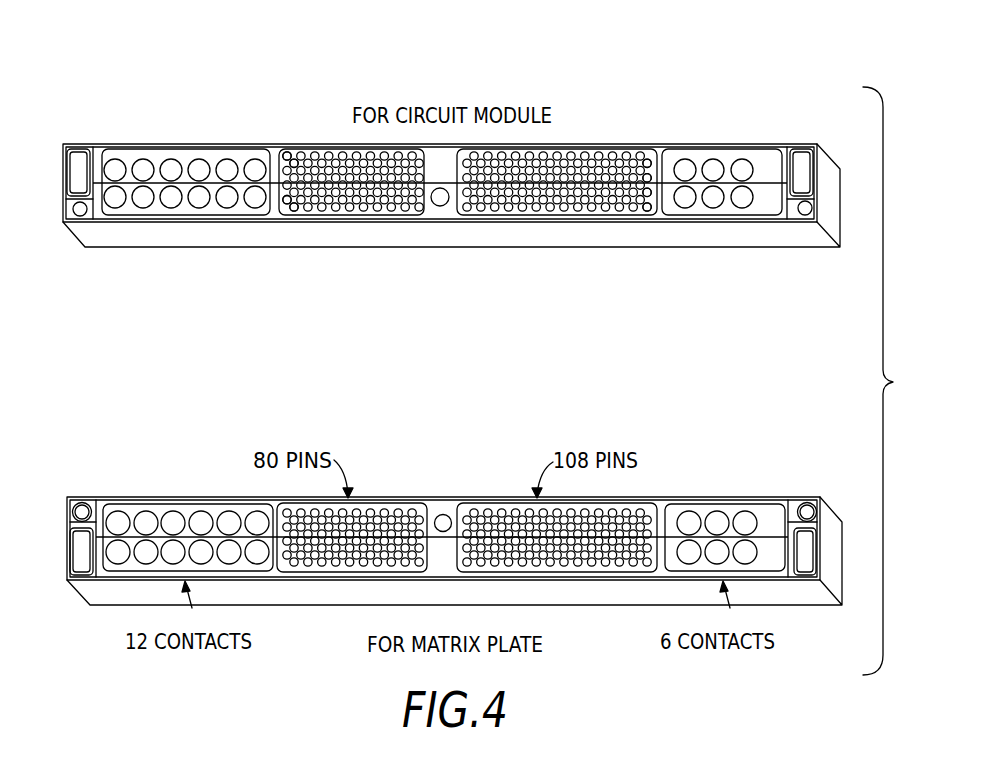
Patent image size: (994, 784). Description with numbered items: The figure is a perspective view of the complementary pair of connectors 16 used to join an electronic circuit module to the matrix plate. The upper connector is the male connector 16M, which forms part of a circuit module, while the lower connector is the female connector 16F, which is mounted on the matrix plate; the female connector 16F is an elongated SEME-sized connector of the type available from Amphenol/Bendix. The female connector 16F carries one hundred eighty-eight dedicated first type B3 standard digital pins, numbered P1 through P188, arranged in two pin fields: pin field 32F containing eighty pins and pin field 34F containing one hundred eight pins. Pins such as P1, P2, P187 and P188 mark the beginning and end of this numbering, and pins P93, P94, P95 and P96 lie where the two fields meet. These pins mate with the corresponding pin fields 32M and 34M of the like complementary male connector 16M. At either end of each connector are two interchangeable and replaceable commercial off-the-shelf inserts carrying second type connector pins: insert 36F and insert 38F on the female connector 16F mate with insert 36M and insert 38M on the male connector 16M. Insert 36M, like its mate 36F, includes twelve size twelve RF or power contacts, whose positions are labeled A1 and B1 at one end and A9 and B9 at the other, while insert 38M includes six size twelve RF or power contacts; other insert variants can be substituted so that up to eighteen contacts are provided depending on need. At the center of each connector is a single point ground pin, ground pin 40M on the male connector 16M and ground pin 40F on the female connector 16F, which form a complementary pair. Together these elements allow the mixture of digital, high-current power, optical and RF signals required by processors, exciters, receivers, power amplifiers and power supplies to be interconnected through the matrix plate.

The connector 16 is at (891, 381).
The male connector 16M is at (126, 71).
The female connector 16F is at (125, 446).
The insert 36M is at (205, 149).
The pin field 32M is at (358, 212).
The single point ground pin 40M is at (440, 206).
The pin field 34M is at (545, 212).
The insert 38M is at (782, 150).
The contact A1 is at (112, 159).
The contact B1 is at (113, 208).
The contact A9 is at (741, 159).
The contact B9 is at (745, 208).
The first type standard connector pin P1 is at (284, 152).
The first type standard connector pin P2 is at (292, 159).
The first type standard connector pin P187 is at (285, 204).
The first type standard connector pin P188 is at (293, 212).
The first type standard connector pin P93 is at (650, 174).
The first type standard connector pin P94 is at (647, 159).
The first type standard connector pin P95 is at (650, 197).
The first type standard connector pin P96 is at (648, 212).
The insert 36F is at (203, 503).
The pin field 32F is at (320, 573).
The single point ground pin 40F is at (443, 514).
The pin field 34F is at (608, 573).
The insert 38F is at (730, 503).